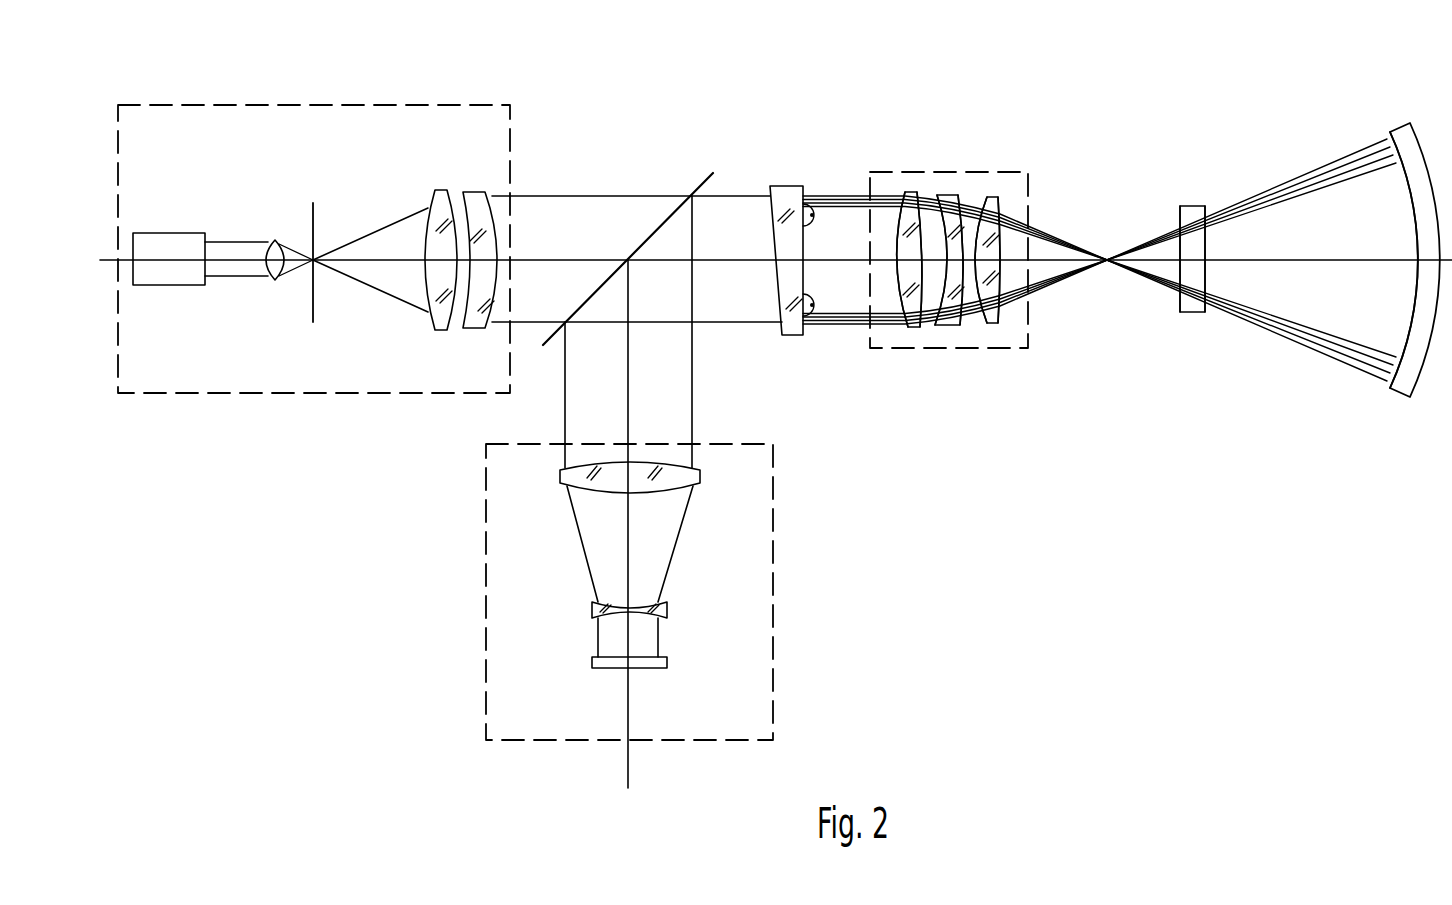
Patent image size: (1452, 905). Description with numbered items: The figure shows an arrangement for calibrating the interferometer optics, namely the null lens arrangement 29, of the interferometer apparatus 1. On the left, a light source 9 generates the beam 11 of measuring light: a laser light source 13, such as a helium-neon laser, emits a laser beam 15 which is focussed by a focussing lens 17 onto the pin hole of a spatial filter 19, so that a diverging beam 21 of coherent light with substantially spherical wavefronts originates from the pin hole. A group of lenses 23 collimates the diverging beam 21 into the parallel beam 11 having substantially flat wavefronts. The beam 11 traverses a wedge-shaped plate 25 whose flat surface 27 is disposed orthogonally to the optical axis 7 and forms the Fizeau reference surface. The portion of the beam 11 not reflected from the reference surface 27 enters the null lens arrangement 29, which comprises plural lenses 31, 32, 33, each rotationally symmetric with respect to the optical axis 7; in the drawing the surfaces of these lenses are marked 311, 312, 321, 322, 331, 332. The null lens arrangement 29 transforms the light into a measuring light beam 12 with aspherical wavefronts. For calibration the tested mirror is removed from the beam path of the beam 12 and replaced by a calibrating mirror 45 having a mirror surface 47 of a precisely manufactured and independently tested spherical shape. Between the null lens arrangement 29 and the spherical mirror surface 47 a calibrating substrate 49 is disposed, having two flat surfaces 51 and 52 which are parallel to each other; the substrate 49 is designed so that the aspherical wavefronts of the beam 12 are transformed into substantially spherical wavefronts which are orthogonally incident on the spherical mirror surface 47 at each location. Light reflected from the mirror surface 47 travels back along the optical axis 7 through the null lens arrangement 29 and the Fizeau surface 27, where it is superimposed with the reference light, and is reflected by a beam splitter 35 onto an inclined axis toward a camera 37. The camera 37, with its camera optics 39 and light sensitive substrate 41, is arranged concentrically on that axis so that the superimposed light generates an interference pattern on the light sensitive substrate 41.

The interferometer apparatus 1 is at (632, 104).
The optical axis 7 is at (1365, 260).
The light source 9 is at (420, 107).
The beam of measuring light 11 is at (545, 196).
The measuring light beam 12 is at (1147, 238).
The laser light source 13 is at (157, 233).
The laser beam 15 is at (225, 242).
The focussing lens 17 is at (276, 240).
The spatial filter 19 is at (314, 203).
The diverging beam 21 is at (354, 237).
The group of lenses 23 is at (480, 192).
The wedge-shaped plate 25 is at (787, 186).
The flat surface 27 is at (810, 335).
The null lens arrangement 29 is at (1028, 337).
The lens 31 is at (912, 327).
The first surface of first lens 311 is at (905, 192).
The second surface of first lens 312 is at (918, 192).
The lens 32 is at (948, 325).
The first surface of second lens 321 is at (938, 195).
The second surface of second lens 322 is at (959, 195).
The lens 33 is at (1000, 323).
The first surface of third lens 331 is at (988, 197).
The second surface of third lens 332 is at (1000, 200).
The beam splitter 35 is at (699, 183).
The camera 37 is at (773, 650).
The camera optics 39 is at (560, 473).
The light sensitive substrate 41 is at (592, 661).
The calibrating mirror 45 is at (1397, 396).
The mirror surface 47 is at (1410, 318).
The calibrating substrate 49 is at (1190, 313).
The flat surface 51 is at (1178, 309).
The flat surface 52 is at (1206, 313).